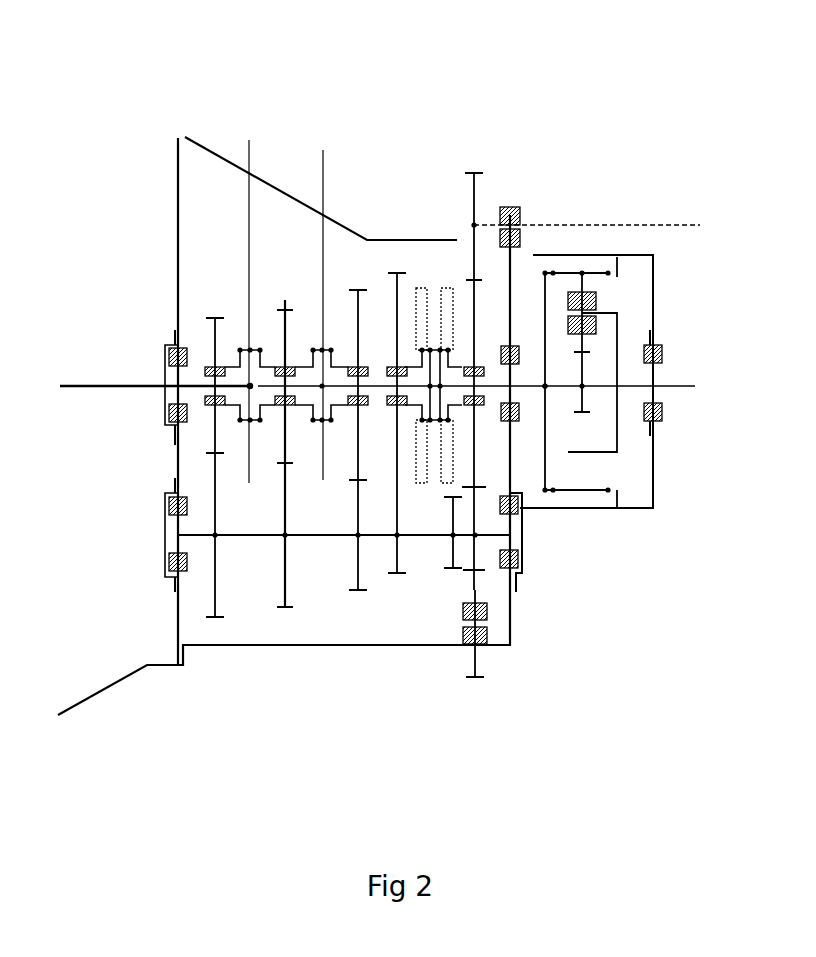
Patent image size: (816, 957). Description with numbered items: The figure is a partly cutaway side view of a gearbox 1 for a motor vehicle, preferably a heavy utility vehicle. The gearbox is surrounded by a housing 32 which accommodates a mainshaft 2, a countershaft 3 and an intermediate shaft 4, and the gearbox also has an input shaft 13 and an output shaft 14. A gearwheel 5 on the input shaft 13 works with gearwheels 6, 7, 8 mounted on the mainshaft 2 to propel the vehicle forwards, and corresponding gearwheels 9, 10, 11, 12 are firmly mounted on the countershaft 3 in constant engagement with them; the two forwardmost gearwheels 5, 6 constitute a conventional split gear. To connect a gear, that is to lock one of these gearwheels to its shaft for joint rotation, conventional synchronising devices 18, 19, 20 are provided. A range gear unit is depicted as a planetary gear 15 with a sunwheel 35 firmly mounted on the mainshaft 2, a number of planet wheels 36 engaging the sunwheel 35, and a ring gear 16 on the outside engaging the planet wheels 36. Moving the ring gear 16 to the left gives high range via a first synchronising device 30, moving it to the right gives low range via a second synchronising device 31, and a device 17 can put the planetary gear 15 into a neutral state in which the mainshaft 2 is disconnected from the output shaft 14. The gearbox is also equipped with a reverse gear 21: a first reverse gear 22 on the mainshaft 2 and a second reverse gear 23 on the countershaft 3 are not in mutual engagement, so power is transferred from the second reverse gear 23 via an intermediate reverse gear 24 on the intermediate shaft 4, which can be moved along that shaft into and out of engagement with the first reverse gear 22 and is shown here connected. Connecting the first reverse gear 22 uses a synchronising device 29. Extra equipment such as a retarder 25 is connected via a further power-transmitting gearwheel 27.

The gearbox 1 is at (143, 125).
The mainshaft 2 is at (392, 362).
The countershaft 3 is at (313, 535).
The intermediate shaft 4 is at (450, 623).
The gearwheel 5 is at (216, 316).
The gearwheel 6 is at (285, 310).
The gearwheel 7 is at (357, 288).
The gearwheel 8 is at (397, 272).
The gearwheel 9 is at (216, 620).
The gearwheel 10 is at (288, 610).
The gearwheel 11 is at (359, 595).
The gearwheel 12 is at (398, 578).
The input shaft 13 is at (89, 382).
The output shaft 14 is at (683, 390).
The planetary gear 15 is at (683, 258).
The ring gear 16 is at (590, 493).
The device 17 is at (577, 272).
The synchronising device 18 is at (250, 294).
The synchronising device 19 is at (321, 293).
The synchronising device 20 is at (429, 288).
The reverse gear 21 is at (537, 617).
The first reverse gear 22 is at (497, 322).
The second reverse gear 23 is at (478, 557).
The intermediate reverse gear 24 is at (476, 682).
The retarder 25 is at (610, 205).
The gearwheel 27 is at (494, 176).
The synchronising device 29 is at (472, 282).
The first synchronising device 30 is at (556, 492).
The second synchronising device 31 is at (622, 497).
The housing 32 is at (262, 648).
The sunwheel 35 is at (585, 408).
The planet wheels 36 is at (584, 343).